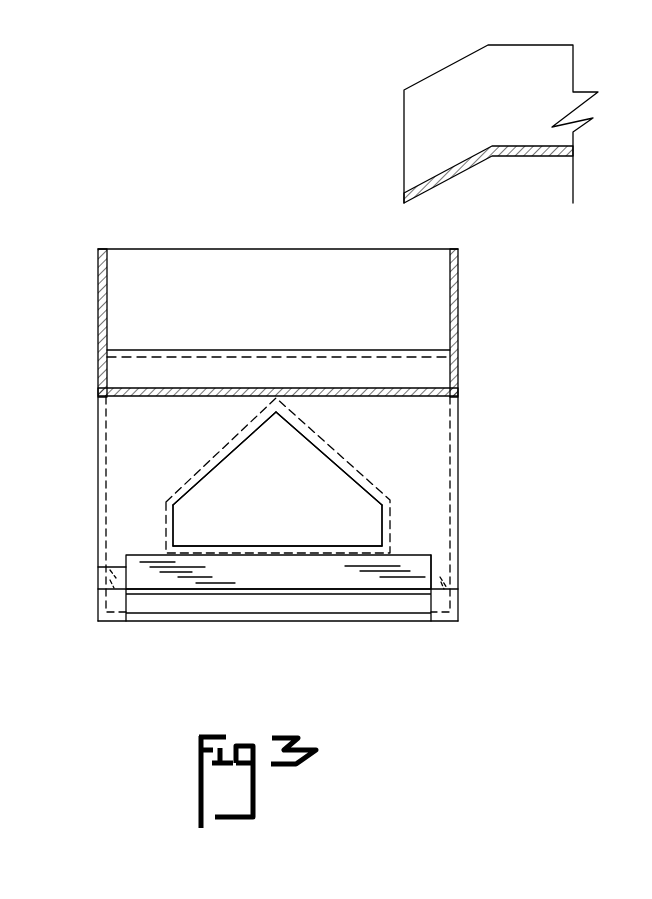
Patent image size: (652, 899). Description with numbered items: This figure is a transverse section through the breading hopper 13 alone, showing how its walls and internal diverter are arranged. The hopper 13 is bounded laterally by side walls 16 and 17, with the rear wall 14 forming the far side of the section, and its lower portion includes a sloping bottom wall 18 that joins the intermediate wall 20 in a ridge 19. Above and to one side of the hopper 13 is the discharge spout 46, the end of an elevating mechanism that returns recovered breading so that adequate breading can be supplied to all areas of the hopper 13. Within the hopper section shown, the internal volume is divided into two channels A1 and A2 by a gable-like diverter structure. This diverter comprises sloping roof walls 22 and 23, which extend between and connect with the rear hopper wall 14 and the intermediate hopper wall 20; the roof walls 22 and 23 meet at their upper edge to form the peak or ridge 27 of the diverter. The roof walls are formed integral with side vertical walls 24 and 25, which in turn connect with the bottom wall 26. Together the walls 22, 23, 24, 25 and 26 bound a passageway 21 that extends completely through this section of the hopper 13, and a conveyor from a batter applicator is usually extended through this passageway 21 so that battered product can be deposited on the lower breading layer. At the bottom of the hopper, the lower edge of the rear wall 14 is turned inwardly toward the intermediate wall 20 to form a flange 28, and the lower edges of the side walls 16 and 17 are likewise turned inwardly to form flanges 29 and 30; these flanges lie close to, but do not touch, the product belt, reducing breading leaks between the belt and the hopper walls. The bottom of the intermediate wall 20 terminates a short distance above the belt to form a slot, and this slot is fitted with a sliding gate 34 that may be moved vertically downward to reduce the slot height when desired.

The hopper 13 is at (462, 251).
The rear wall 14 is at (413, 269).
The side wall 16 is at (98, 325).
The side wall 17 is at (458, 279).
The sloping bottom wall 18 is at (418, 378).
The ridge 19 is at (423, 350).
The intermediate wall 20 is at (415, 428).
The passageway 21 is at (357, 517).
The sloping roof wall 22 is at (345, 470).
The sloping roof wall 23 is at (214, 470).
The side vertical wall 24 is at (372, 508).
The side vertical wall 25 is at (175, 512).
The bottom wall 26 is at (300, 543).
The peak or ridge 27 is at (276, 397).
The flange 28 is at (357, 614).
The flange 29 is at (113, 572).
The flange 30 is at (447, 575).
The sliding gate 34 is at (410, 556).
The discharge spout 46 is at (547, 60).
The channel A1 is at (145, 470).
The channel A2 is at (402, 468).